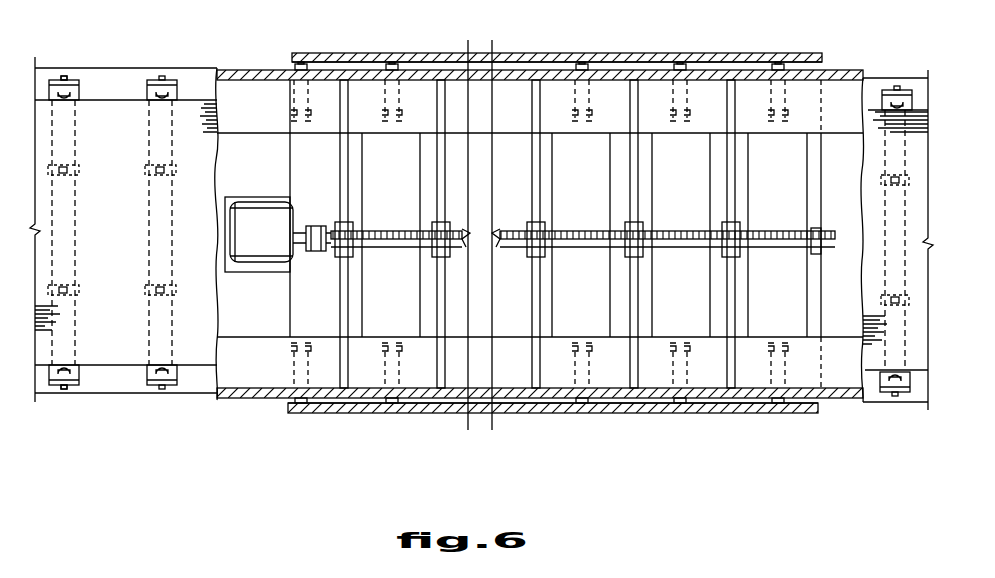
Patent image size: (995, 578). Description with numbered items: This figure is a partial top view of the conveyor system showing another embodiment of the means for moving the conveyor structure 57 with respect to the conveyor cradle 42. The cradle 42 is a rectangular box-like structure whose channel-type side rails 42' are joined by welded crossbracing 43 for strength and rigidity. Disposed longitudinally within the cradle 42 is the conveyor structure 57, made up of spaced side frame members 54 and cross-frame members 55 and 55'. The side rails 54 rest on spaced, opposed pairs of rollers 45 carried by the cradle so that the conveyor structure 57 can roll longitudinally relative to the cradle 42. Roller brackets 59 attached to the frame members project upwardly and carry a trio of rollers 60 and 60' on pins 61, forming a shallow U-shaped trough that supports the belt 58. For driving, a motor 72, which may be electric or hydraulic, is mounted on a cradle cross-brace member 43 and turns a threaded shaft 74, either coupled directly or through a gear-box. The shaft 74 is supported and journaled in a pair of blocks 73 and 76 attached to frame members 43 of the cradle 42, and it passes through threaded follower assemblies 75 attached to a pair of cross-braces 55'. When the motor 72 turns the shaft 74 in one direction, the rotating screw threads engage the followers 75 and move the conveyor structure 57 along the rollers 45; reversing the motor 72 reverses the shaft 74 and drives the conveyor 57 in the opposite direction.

The cradle 42 is at (540, 238).
The side rails 42' is at (555, 235).
The crossbracing 43 is at (305, 172).
The rollers 45 is at (300, 100).
The side frame members 54 is at (619, 72).
The cross-frame members 55 is at (537, 234).
The cross-frame members 55' is at (511, 168).
The conveyor structure 57 is at (854, 402).
The belt 58 is at (203, 298).
The roller brackets 59 is at (78, 80).
The rollers 60 is at (478, 235).
The rollers 60' is at (478, 235).
The pins 61 is at (64, 76).
The motor 72 is at (278, 237).
The block 73 is at (320, 251).
The threaded shaft 74 is at (400, 231).
The threaded follower assemblies 75 is at (350, 258).
The block 76 is at (812, 254).